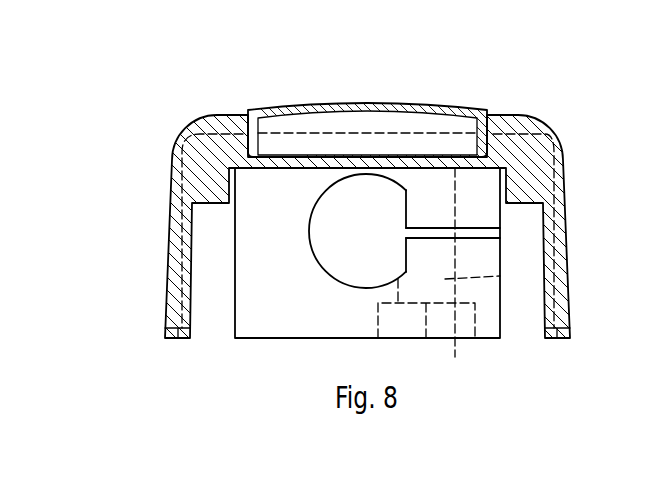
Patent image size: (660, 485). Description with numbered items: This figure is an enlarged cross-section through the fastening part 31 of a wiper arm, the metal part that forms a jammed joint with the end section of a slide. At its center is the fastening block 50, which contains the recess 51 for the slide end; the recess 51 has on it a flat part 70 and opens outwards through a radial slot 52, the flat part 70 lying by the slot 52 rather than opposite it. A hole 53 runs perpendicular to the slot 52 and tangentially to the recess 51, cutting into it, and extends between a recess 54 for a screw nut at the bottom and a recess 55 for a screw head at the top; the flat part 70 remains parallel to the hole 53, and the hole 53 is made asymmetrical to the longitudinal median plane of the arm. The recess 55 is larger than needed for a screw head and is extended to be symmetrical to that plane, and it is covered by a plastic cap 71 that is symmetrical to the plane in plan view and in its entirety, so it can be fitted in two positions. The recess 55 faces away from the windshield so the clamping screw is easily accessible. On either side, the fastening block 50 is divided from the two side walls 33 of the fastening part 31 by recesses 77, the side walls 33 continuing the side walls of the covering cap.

The fastening part 31 is at (222, 111).
The side walls 33 is at (176, 263).
The recesses 77 is at (213, 327).
The plastic cap 71 is at (316, 105).
The recess for a screw head 55 is at (455, 138).
The fastening block 50 is at (270, 327).
The recess 51 is at (340, 257).
The flat part 70 is at (405, 255).
The radial slot 52 is at (500, 230).
The hole 53 is at (465, 279).
The recess for a screw nut 54 is at (426, 277).